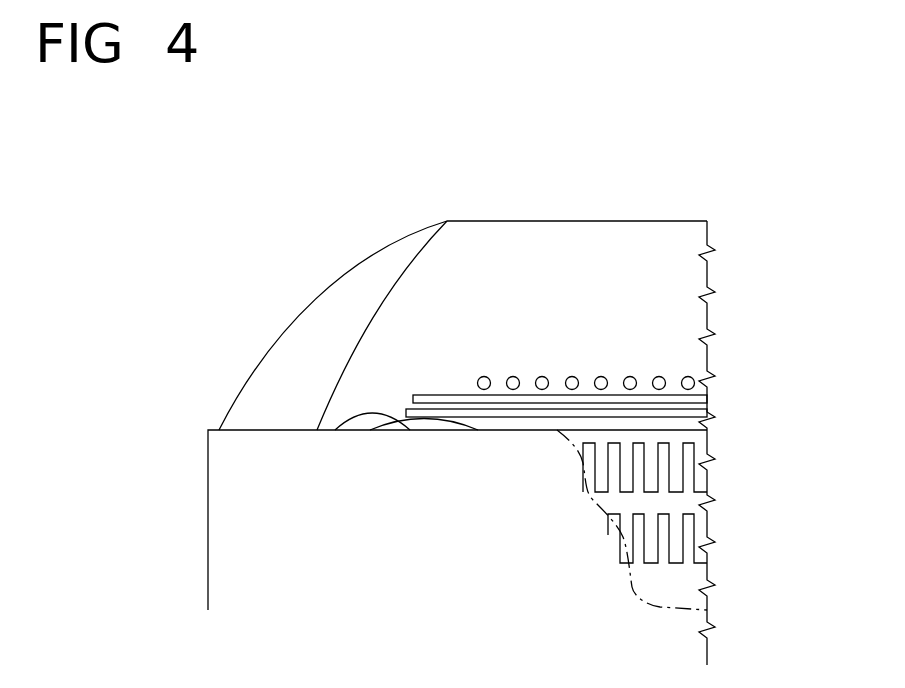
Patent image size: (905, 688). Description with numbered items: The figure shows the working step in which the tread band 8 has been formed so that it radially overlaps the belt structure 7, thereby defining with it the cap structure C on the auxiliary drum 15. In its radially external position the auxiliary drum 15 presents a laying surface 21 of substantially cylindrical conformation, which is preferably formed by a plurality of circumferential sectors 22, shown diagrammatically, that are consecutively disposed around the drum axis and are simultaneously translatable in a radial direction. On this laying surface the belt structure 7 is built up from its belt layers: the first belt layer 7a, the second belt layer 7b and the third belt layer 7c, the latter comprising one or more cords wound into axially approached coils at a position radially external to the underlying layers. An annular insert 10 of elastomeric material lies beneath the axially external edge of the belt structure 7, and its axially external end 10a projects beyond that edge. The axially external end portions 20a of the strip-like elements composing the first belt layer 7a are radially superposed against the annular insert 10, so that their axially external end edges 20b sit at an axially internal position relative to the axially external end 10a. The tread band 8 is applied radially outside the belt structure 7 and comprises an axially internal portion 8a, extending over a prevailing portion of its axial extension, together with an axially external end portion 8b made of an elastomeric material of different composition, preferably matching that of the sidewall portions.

The belt structure 7 is at (712, 412).
The first belt layer 7a is at (468, 409).
The second belt layer 7b is at (553, 395).
The third belt layer 7c is at (630, 378).
The tread band 8 is at (580, 221).
The axially internal portion of the tread band 8a is at (620, 267).
The axially external end portion of the tread band 8b is at (315, 360).
The annular insert 10 is at (383, 432).
The axially external end of the annular insert 10a is at (357, 423).
The auxiliary drum 15 is at (207, 468).
The axially external end portion of the strip-like element 20a is at (455, 430).
The axially external end edge of the strip-like element 20b is at (410, 430).
The laying surface 21 is at (235, 430).
The circumferential sectors 22 is at (677, 435).
The cap structure C is at (742, 322).